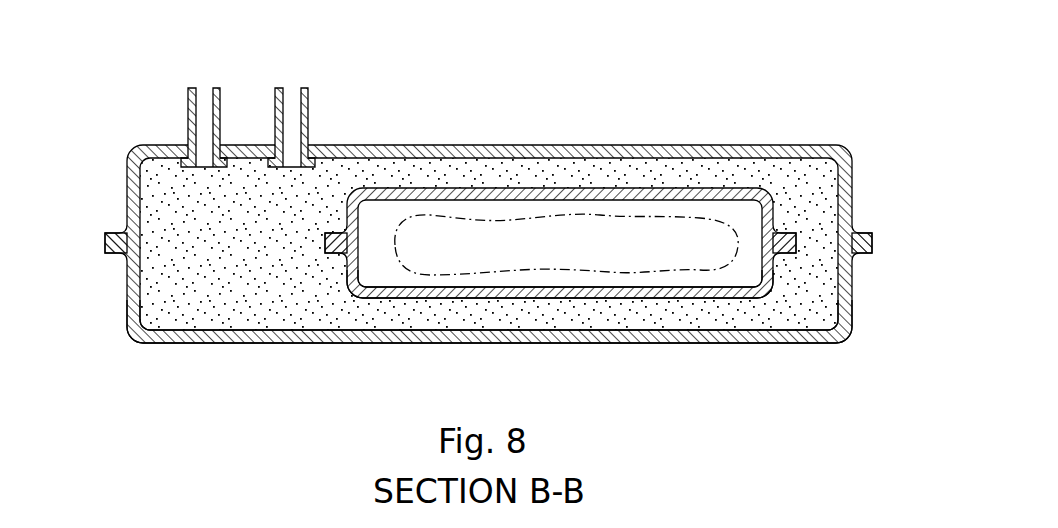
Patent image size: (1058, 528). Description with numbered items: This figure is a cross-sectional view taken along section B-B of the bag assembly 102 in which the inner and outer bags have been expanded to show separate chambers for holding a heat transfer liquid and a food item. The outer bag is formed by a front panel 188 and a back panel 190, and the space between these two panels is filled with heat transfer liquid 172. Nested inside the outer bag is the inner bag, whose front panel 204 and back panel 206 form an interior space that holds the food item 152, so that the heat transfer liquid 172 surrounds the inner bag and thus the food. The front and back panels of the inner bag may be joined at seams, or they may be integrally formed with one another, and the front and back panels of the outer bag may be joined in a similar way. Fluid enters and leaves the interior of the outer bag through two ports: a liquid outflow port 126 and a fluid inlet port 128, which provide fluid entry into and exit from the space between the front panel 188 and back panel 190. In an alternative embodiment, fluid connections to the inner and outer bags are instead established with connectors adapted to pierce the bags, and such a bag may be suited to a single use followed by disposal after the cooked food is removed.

The battery module assembly 102 is at (490, 221).
The liquid outflow port 126 is at (196, 88).
The fluid inlet port 128 is at (300, 88).
The food item 152 is at (510, 222).
The heat transfer liquid 172 is at (240, 318).
The front panel of the outer bag 188 is at (372, 144).
The back panel of the outer bag 190 is at (678, 343).
The front panel of the inner bag 204 is at (615, 189).
The back panel of the inner bag 206 is at (565, 298).